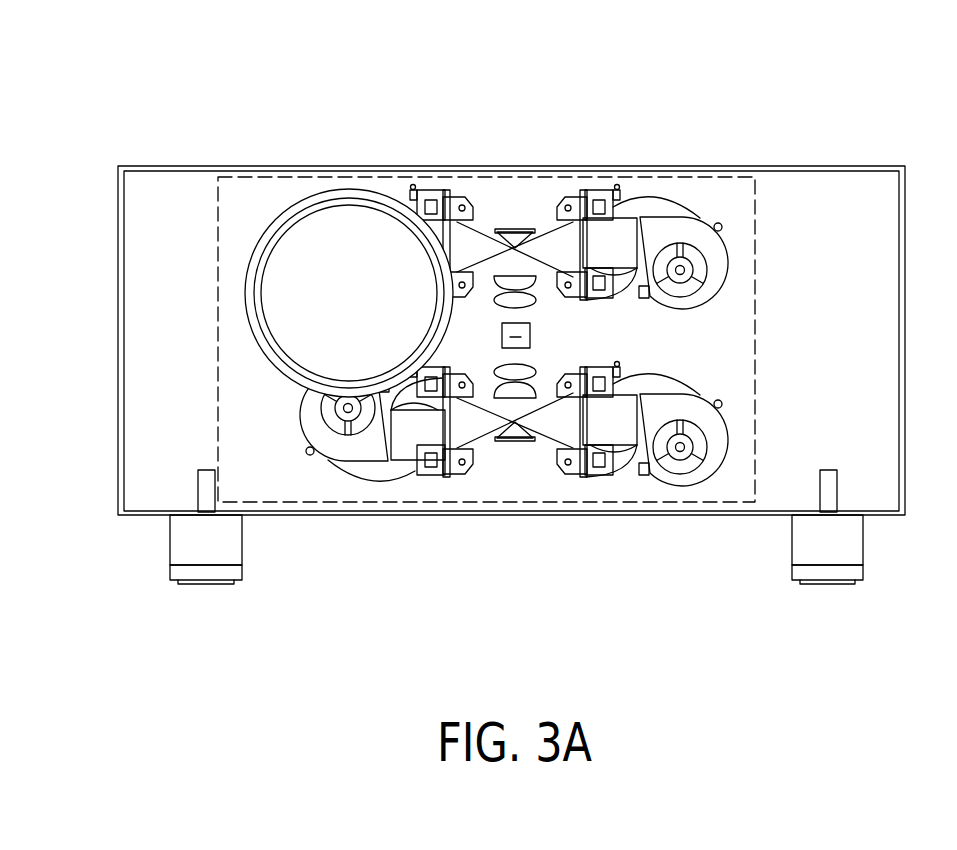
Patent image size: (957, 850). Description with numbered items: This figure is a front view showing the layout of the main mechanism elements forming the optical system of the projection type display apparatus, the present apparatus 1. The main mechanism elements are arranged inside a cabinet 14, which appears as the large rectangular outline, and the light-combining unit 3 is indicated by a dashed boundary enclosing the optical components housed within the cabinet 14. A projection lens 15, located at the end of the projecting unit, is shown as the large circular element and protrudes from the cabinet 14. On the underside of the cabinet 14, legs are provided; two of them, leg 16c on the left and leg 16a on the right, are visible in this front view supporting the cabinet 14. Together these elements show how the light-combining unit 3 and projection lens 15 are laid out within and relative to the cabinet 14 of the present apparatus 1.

The present apparatus 1 is at (623, 95).
The light-combining unit 3 is at (757, 232).
The cabinet 14 is at (120, 350).
The projection lens 15 is at (315, 253).
The leg 16a is at (826, 552).
The leg 16c is at (205, 552).